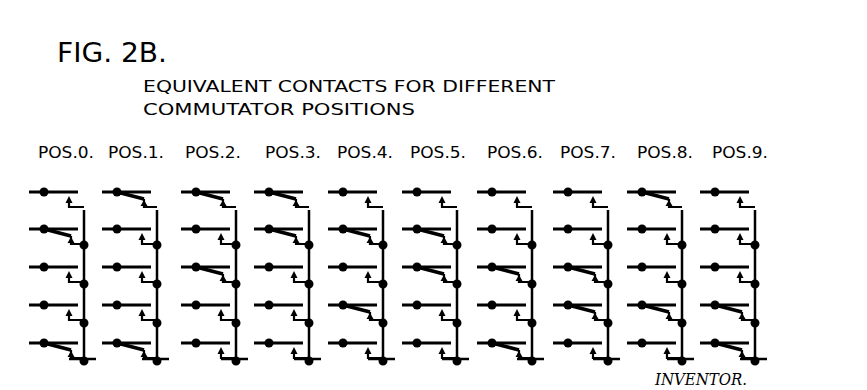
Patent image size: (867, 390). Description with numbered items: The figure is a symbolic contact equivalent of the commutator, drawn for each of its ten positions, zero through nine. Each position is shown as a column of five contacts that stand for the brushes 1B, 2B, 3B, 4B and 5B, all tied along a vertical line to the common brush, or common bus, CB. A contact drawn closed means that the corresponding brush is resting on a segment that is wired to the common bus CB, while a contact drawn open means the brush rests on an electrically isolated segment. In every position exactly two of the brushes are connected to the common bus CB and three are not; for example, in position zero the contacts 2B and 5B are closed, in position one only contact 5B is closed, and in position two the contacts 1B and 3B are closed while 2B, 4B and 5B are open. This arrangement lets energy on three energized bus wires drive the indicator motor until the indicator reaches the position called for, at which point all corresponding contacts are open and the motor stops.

The brush 1B is at (392, 188).
The brush 2B is at (392, 225).
The brush 3B is at (392, 263).
The brush 4B is at (392, 301).
The brush 5B is at (392, 339).
The common brush CB is at (429, 297).